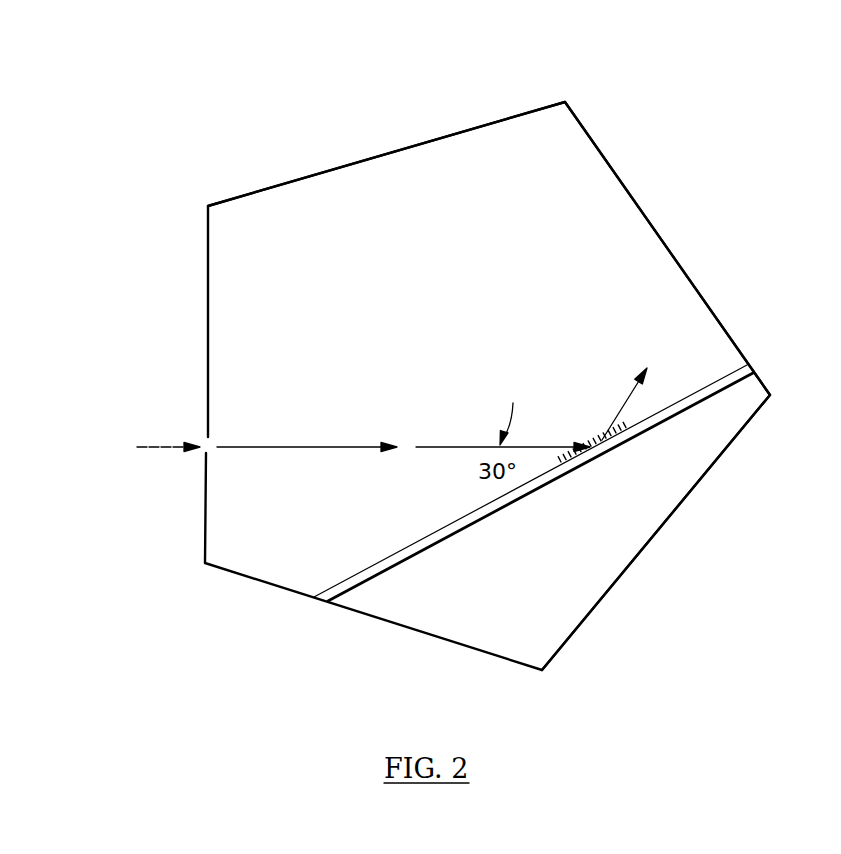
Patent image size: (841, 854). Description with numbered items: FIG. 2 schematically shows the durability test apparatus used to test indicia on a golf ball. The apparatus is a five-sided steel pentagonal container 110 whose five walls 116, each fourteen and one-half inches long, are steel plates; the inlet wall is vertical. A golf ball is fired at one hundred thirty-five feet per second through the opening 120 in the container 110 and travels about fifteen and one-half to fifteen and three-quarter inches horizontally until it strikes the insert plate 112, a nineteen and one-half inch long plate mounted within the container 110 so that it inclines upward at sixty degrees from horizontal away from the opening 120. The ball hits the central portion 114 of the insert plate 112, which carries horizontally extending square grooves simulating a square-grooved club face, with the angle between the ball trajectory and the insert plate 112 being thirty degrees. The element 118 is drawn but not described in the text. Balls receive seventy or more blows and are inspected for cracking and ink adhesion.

The container 110 is at (340, 80).
The insert plate 112 is at (707, 400).
The central portion 114 is at (596, 459).
The walls 116 is at (424, 140).
The reflective plate 118 is at (530, 508).
The opening 120 is at (206, 442).